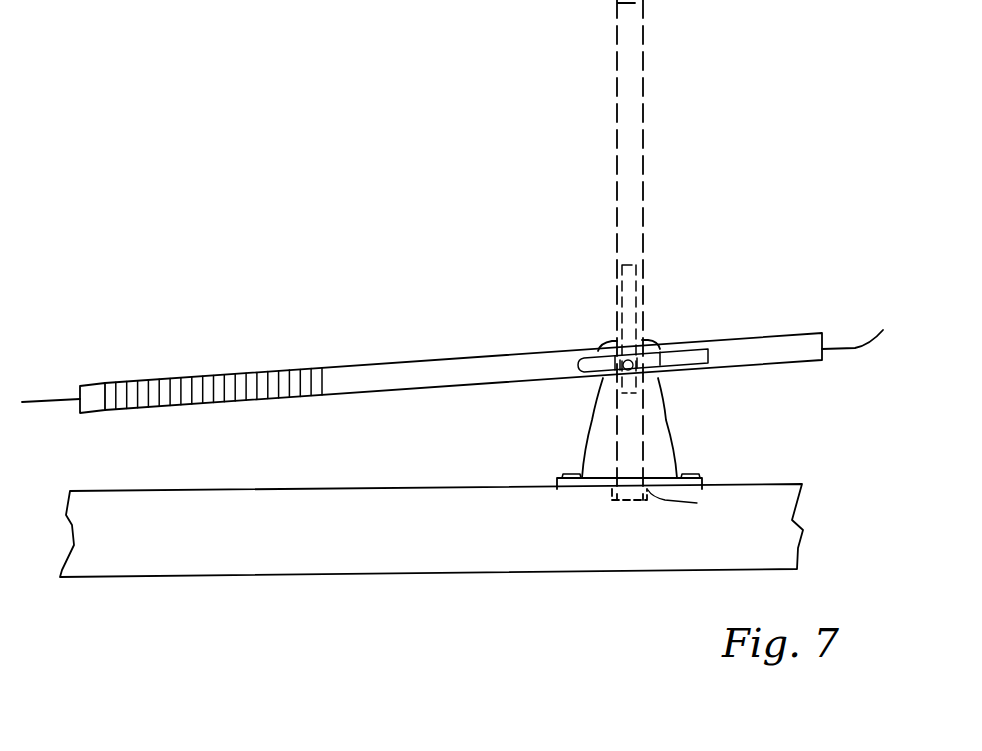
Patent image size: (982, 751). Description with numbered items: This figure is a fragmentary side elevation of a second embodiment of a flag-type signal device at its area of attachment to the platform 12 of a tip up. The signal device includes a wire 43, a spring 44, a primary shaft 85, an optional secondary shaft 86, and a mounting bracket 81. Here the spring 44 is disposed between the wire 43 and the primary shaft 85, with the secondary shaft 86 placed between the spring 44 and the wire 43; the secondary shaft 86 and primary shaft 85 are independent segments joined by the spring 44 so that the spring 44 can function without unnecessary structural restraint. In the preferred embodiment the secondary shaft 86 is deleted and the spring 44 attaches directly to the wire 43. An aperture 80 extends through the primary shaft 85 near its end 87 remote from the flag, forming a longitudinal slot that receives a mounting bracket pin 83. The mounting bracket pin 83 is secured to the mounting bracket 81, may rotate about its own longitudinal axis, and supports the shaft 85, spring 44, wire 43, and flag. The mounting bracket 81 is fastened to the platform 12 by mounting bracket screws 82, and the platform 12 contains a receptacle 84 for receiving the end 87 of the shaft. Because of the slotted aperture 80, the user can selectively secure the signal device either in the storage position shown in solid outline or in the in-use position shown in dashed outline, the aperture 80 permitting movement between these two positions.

The platform 12 is at (307, 488).
The wire 43 is at (45, 398).
The spring 44 is at (215, 372).
The aperture 80 is at (697, 343).
The mounting bracket 81 is at (675, 428).
The mounting bracket screws 82 is at (565, 478).
The mounting bracket pin 83 is at (592, 358).
The receptacle 84 is at (673, 505).
The primary shaft 85 is at (363, 365).
The secondary shaft 86 is at (93, 411).
The end 87 is at (867, 327).